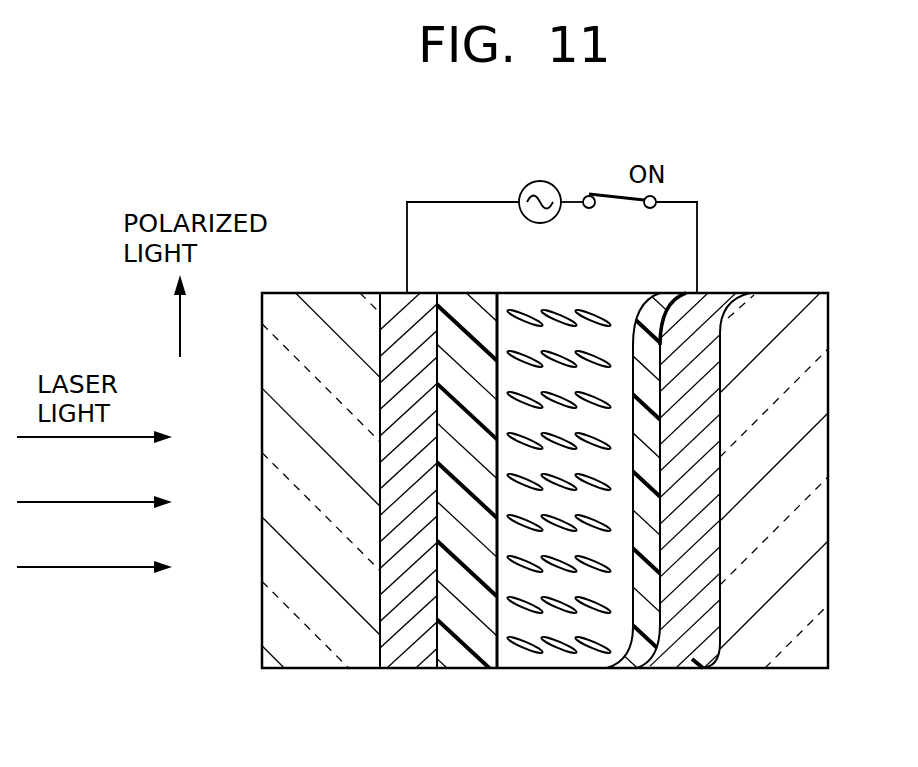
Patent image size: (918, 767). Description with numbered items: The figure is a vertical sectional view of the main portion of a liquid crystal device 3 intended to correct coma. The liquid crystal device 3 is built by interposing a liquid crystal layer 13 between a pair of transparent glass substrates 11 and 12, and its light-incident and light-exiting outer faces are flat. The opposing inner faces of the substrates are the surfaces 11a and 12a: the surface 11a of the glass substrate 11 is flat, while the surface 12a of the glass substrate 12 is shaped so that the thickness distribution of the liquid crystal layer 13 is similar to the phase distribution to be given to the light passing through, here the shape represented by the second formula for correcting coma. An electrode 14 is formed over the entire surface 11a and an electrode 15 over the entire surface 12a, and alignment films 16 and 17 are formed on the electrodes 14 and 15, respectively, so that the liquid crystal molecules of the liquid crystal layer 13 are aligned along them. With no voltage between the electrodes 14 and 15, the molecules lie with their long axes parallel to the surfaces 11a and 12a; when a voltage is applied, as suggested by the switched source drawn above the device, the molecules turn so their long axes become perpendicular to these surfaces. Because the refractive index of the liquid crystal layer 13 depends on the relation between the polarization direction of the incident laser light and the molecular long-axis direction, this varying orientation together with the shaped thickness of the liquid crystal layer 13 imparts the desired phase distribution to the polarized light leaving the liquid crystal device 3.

The liquid crystal device 3 is at (807, 268).
The glass substrate 11 is at (325, 312).
The surface 11a is at (378, 582).
The glass substrate 12 is at (768, 312).
The surface 12a is at (720, 577).
The liquid crystal layer 13 is at (558, 655).
The electrode 14 is at (408, 638).
The electrode 15 is at (677, 627).
The alignment film 16 is at (466, 632).
The alignment film 17 is at (647, 647).